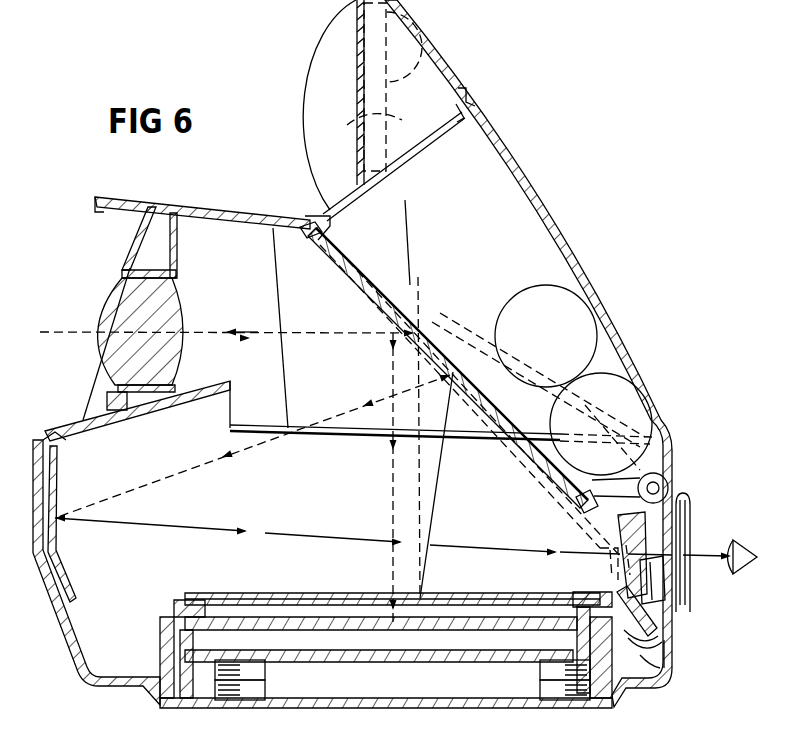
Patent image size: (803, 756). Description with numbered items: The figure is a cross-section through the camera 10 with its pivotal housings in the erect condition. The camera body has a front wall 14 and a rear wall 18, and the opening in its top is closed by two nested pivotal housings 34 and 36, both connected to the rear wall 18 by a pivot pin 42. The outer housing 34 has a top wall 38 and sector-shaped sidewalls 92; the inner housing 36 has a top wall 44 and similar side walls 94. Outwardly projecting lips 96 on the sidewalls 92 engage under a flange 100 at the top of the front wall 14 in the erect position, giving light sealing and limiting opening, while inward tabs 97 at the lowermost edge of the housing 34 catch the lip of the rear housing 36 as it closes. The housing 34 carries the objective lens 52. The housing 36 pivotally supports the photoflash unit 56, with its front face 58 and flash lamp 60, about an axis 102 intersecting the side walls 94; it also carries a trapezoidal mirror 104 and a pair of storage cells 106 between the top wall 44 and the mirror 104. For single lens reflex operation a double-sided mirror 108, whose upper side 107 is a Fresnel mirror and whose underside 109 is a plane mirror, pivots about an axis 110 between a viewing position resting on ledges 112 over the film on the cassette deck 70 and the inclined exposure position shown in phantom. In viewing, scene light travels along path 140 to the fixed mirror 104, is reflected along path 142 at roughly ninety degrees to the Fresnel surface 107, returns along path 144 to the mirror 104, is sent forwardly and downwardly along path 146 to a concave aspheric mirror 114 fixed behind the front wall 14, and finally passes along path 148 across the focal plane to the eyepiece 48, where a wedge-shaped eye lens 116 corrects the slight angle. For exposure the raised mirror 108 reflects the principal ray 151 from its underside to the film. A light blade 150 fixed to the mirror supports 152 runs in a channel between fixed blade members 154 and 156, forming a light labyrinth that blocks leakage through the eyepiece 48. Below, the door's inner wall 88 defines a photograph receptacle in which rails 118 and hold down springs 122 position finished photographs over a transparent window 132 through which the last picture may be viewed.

The camera 10 is at (662, 217).
The front wall 14 is at (60, 630).
The rear wall 18 is at (665, 670).
The pivotal housing 34 is at (181, 204).
The pivotal housing 36 is at (536, 171).
The top wall 38 is at (287, 210).
The pivot pin 42 is at (662, 489).
The top wall 44 is at (552, 222).
The viewing eyepiece 48 is at (684, 532).
The objective lens 52 is at (110, 300).
The photoflash unit 56 is at (332, 119).
The front face 58 is at (386, 116).
The flash lamp 60 is at (362, 55).
The cassette deck 70 is at (424, 630).
The inner wall 88 is at (412, 662).
The sidewalls 92 is at (247, 287).
The side walls 94 is at (457, 224).
The lips 96 is at (70, 444).
The tabs 97 is at (276, 425).
The flange 100 is at (66, 420).
The axis 102 is at (478, 112).
The trapezoidal mirror 104 is at (423, 318).
The storage cells 106 is at (607, 380).
The upper side 107 is at (218, 593).
The double-sided mirror 108 is at (356, 303).
The underside 109 is at (240, 600).
The axis 110 is at (666, 587).
The ledges 112 is at (178, 602).
The concave aspheric mirror 114 is at (70, 588).
The eye lens 116 is at (647, 532).
The rails 118 is at (268, 690).
The photograph hold down springs 122 is at (272, 671).
The transparent window 132 is at (350, 699).
The path 140 is at (272, 328).
The path 142 is at (393, 476).
The path 144 is at (446, 466).
The path 146 is at (206, 460).
The path 148 is at (176, 528).
The light blade 150 is at (616, 565).
The principal ray 151 is at (272, 340).
The mirror support 152 is at (660, 612).
The fixed blade member 154 is at (662, 642).
The fixed blade member 156 is at (655, 660).